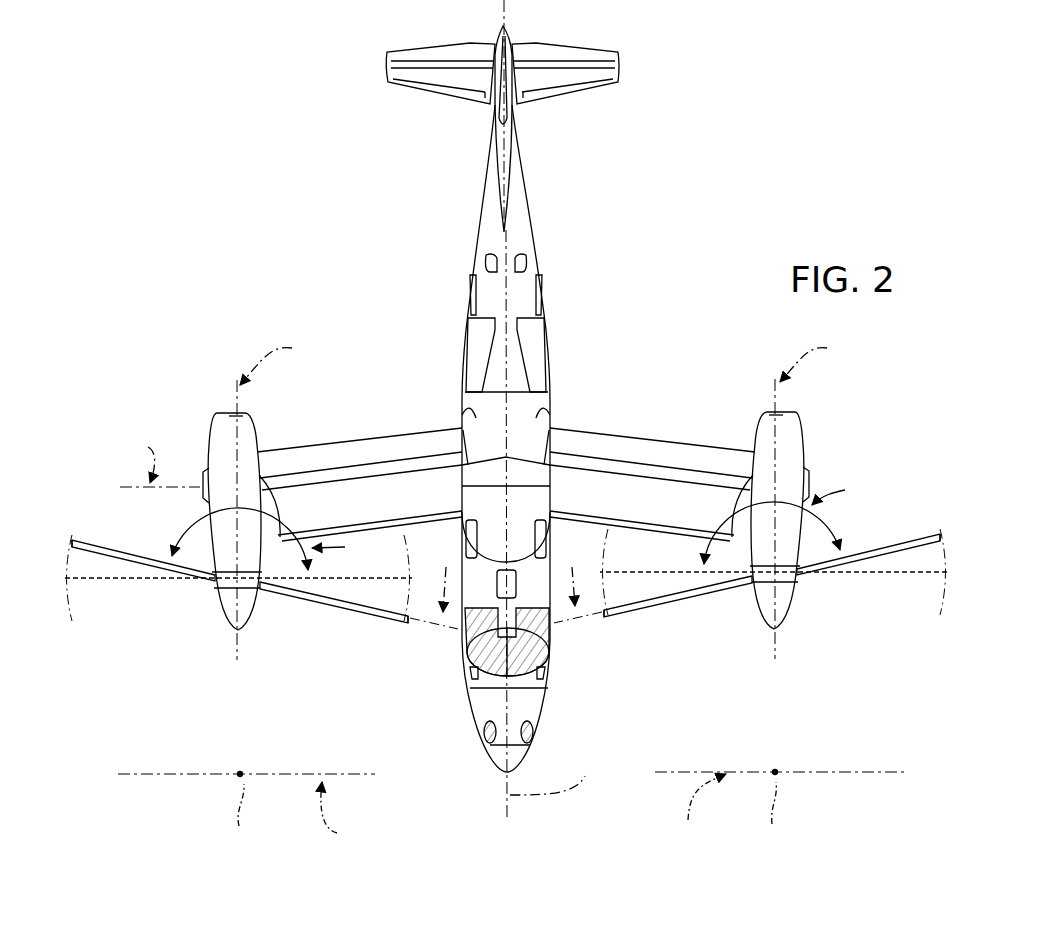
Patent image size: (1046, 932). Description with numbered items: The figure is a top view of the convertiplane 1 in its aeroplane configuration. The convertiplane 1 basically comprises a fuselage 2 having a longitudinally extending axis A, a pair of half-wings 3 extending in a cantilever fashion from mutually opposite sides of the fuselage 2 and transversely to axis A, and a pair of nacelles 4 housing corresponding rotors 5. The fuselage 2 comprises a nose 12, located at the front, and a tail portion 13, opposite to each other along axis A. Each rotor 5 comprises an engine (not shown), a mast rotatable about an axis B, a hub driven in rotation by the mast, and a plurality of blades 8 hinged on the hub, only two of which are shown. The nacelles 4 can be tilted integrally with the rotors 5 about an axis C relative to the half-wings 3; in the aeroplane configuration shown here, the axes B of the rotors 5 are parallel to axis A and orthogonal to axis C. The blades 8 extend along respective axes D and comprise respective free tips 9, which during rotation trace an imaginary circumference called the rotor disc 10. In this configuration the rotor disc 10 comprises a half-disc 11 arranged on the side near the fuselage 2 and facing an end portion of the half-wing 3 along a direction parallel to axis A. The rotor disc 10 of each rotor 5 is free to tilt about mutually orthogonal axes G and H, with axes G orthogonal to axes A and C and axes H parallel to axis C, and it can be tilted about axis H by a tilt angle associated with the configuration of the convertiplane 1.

The convertiplane 1 is at (673, 222).
The fuselage 2 is at (548, 312).
The half-wings 3 is at (390, 440).
The nacelles 4 is at (215, 450).
The rotors 5 is at (170, 602).
The blades 8 is at (120, 555).
The free tips 9 is at (72, 539).
The rotor disc 10 is at (278, 655).
The half-disc 11 is at (372, 622).
The nose 12 is at (486, 713).
The tail portion 13 is at (518, 212).